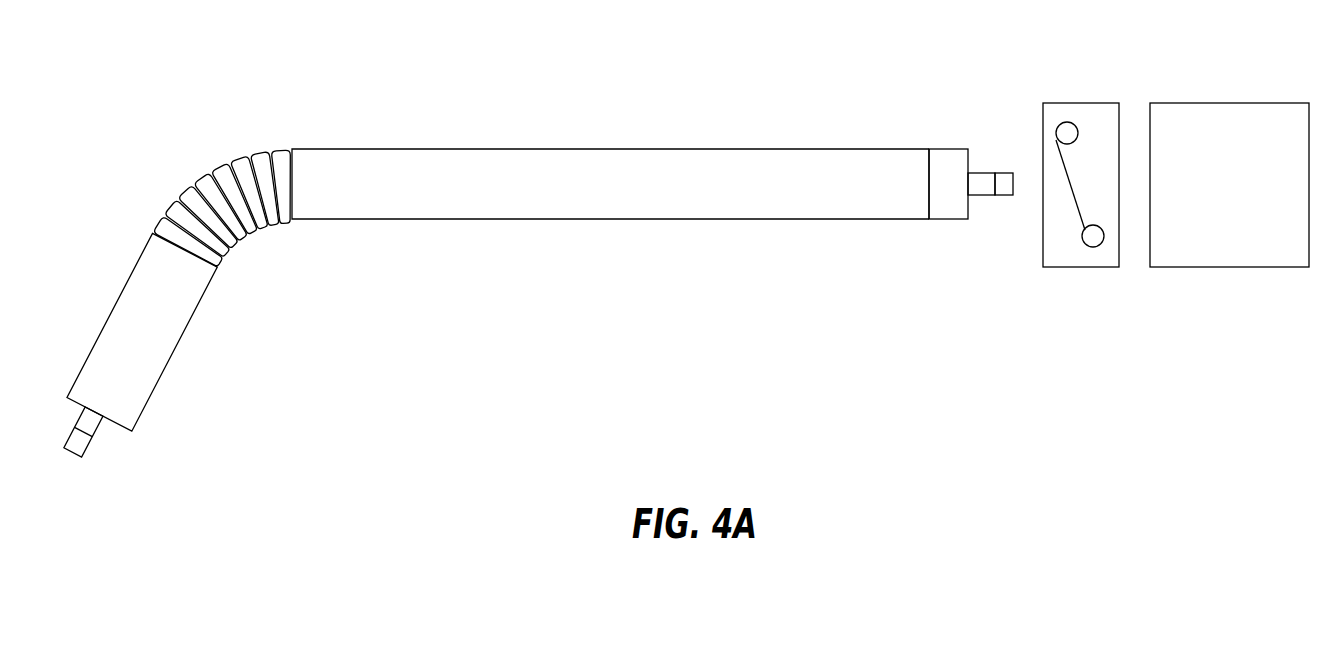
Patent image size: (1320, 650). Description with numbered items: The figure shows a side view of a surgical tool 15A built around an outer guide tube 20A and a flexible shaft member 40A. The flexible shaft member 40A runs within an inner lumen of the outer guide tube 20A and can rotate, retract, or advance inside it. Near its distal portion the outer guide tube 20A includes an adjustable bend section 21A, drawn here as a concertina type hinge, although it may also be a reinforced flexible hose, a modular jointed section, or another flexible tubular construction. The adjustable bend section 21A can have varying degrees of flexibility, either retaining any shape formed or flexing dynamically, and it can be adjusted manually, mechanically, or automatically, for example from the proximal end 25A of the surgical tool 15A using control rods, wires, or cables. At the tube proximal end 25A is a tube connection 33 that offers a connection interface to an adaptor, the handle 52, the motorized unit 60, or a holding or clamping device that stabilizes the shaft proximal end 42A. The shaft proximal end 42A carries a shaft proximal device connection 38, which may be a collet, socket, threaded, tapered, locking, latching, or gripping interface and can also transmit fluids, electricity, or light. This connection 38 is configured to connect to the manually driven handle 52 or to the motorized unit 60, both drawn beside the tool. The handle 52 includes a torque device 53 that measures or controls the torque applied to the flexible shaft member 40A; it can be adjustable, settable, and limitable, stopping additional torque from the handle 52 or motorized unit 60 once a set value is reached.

The surgical tool 15A is at (211, 77).
The outer guide tube 20A is at (631, 148).
The adjustable bend section 21A is at (198, 172).
The proximal end 25A is at (947, 148).
The tube connection 33 is at (950, 210).
The shaft proximal device connection 38 is at (1002, 193).
The flexible shaft member 40A is at (76, 419).
The shaft proximal end 42A is at (981, 173).
The manually driven handle 52 is at (1082, 103).
The torque device 53 is at (1069, 180).
The motorized unit 60 is at (1230, 103).